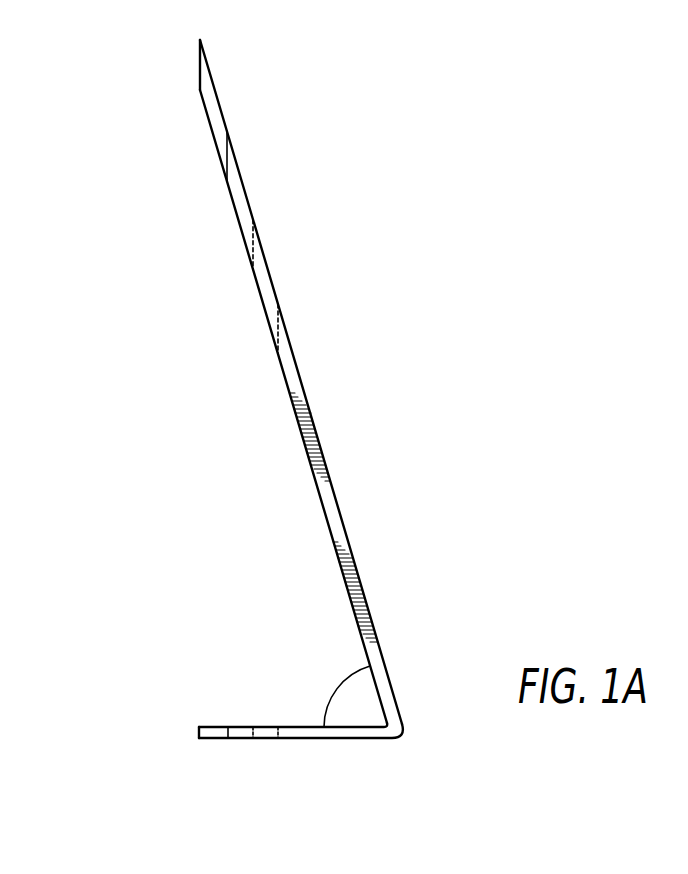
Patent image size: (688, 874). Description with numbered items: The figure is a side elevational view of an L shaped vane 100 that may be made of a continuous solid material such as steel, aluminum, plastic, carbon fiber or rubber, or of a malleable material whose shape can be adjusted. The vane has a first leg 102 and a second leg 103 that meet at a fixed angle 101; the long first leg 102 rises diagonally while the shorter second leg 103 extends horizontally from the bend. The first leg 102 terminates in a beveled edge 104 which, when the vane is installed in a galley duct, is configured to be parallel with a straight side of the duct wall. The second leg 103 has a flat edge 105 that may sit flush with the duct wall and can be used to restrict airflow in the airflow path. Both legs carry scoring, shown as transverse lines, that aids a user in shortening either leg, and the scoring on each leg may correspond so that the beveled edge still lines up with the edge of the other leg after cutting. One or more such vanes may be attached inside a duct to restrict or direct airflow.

The L shaped vane 100 is at (405, 562).
The angle 101 is at (353, 670).
The first leg 102 is at (325, 458).
The second leg 103 is at (309, 786).
The beveled edge 104 is at (200, 64).
The flat edge 105 is at (199, 731).